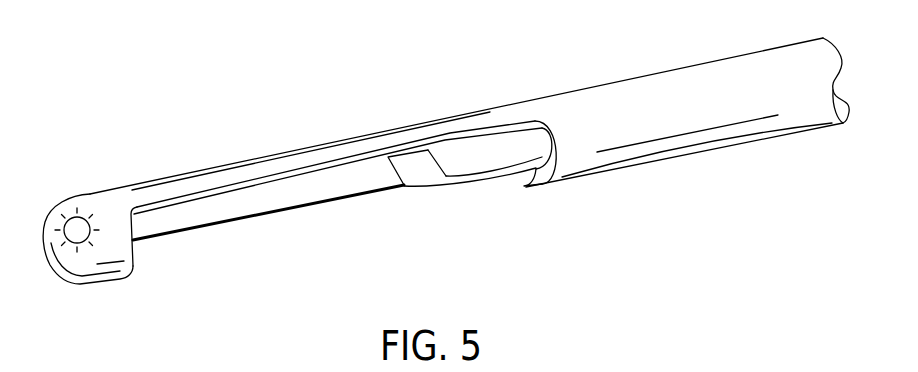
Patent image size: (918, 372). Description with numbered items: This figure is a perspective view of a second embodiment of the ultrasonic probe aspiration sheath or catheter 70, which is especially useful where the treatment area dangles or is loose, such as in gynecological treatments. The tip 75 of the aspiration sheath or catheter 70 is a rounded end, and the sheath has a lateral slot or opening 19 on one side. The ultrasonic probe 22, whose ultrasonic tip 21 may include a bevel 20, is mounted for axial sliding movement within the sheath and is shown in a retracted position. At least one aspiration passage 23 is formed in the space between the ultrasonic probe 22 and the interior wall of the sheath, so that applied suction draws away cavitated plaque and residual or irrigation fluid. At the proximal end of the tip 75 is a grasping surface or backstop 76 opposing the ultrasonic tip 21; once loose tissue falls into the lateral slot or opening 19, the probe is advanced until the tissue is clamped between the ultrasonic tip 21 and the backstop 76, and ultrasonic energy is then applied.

The lateral slot or opening 19 is at (185, 213).
The bevel 20 is at (407, 188).
The ultrasonic tip 21 is at (440, 157).
The ultrasonic probe 22 is at (490, 158).
The aspiration passage 23 is at (535, 178).
The aspiration sheath or catheter 70 is at (702, 155).
The tip 75 is at (56, 250).
The grasping surface or backstop 76 is at (132, 207).